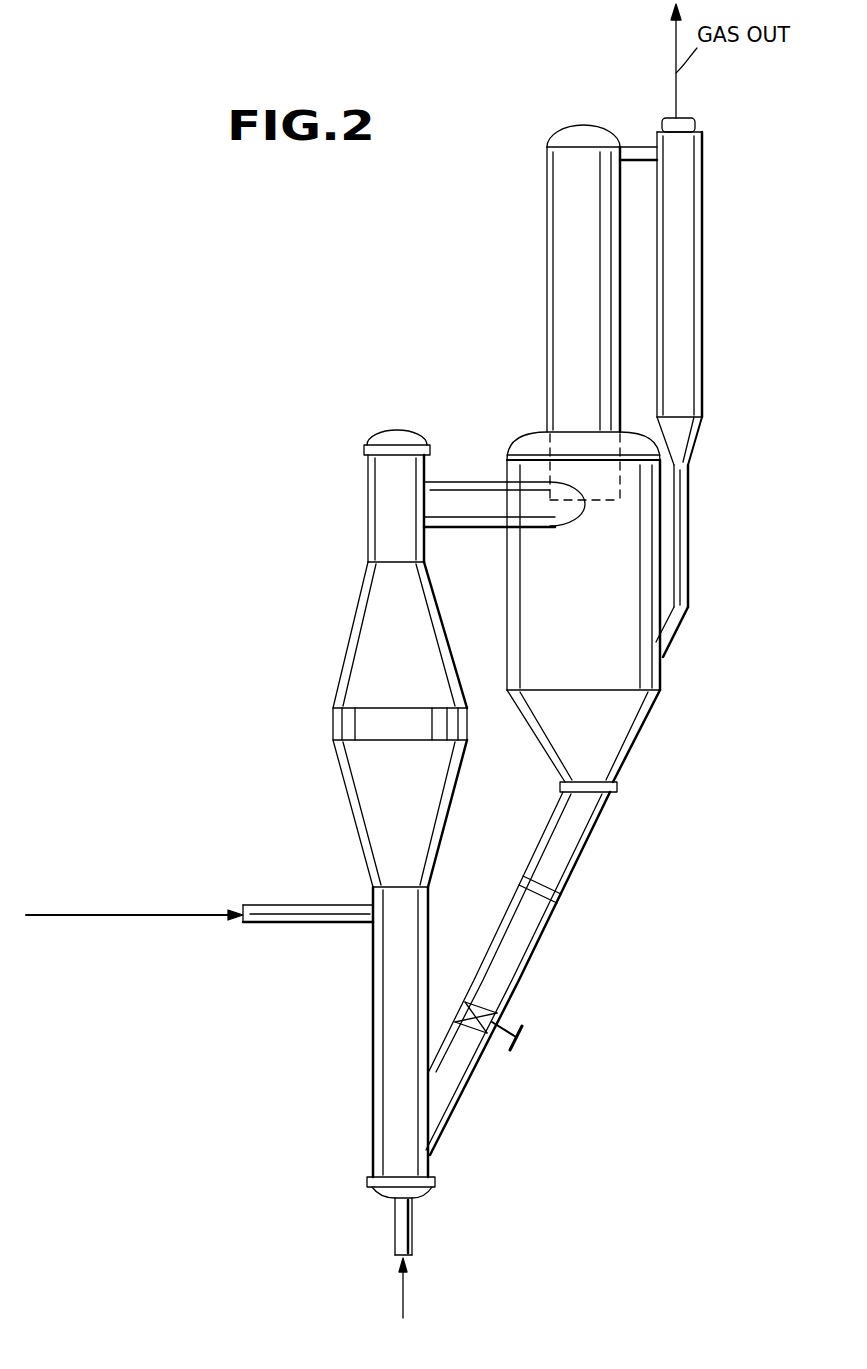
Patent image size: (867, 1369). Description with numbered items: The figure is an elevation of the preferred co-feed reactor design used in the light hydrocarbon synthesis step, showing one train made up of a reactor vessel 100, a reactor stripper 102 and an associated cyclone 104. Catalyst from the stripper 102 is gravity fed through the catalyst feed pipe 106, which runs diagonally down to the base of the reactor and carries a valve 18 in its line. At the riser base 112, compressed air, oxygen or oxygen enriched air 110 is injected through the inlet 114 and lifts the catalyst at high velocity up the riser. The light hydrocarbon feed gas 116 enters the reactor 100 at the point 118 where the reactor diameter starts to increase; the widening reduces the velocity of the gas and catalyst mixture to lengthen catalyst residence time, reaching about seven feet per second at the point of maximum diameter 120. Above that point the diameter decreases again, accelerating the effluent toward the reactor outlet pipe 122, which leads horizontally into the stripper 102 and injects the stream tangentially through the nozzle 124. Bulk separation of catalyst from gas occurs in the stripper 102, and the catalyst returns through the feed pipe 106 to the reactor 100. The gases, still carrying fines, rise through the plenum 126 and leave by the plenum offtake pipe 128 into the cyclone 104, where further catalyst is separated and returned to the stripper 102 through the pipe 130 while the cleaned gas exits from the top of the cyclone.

The valve 18 is at (502, 1022).
The reactor vessel 100 is at (342, 783).
The reactor stripper 102 is at (617, 652).
The cyclone 104 is at (690, 320).
The catalyst feed pipe 106 is at (583, 852).
The compressed air, oxygen or oxygen enriched air 110 is at (404, 1302).
The riser base 112 is at (430, 1200).
The inlet 114 is at (393, 1212).
The light hydrocarbon feed gas 116 is at (203, 912).
The point at which the diameter of the reactor starts to increase 118 is at (295, 924).
The point of maximum diameter 120 is at (340, 722).
The reactor outlet pipe 122 is at (455, 482).
The nozzle 124 is at (546, 528).
The plenum 126 is at (565, 242).
The plenum offtake pipe 128 is at (630, 147).
The pipe 130 is at (690, 587).